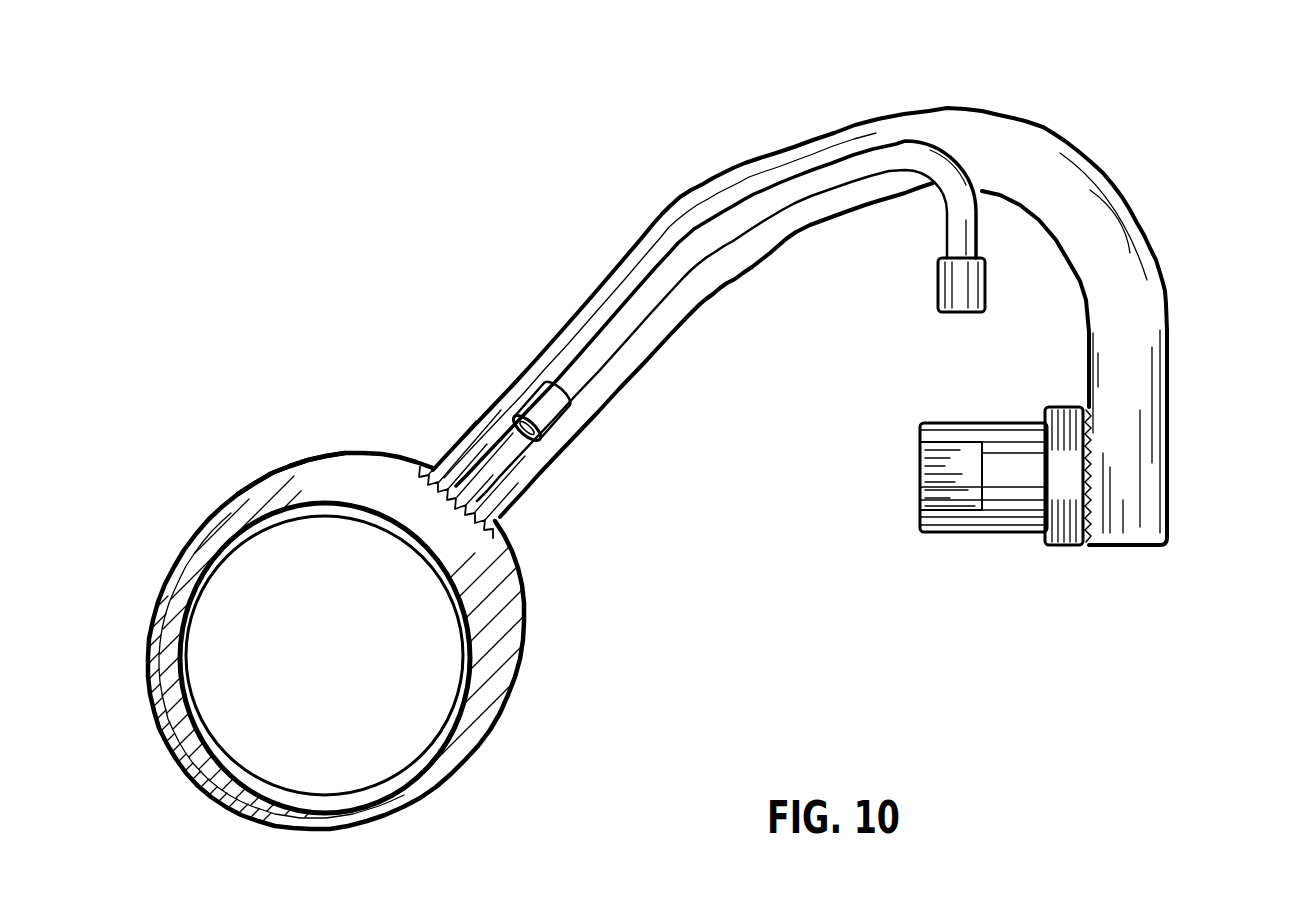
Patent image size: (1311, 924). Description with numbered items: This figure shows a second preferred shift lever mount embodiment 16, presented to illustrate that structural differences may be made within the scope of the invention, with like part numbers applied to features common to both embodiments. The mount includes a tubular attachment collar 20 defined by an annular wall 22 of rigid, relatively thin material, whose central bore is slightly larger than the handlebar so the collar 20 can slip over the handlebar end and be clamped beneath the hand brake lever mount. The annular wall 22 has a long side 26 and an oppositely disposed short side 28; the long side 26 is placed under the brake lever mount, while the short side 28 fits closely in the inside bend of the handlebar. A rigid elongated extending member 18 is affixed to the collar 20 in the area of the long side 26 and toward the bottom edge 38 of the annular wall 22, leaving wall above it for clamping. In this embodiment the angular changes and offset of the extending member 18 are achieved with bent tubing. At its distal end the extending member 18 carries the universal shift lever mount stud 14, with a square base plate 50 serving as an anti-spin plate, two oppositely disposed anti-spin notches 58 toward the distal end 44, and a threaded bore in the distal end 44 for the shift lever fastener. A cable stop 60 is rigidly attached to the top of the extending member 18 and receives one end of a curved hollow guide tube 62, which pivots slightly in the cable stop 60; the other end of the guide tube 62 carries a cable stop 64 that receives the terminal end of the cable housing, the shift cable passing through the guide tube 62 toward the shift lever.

The universal shift lever mount stud 14 is at (973, 532).
The second preferred shift lever mount embodiment 16 is at (660, 190).
The extending member 18 is at (687, 317).
The tubular attachment collar 20 is at (437, 787).
The annular wall 22 is at (500, 640).
The long side 26 is at (453, 547).
The short side 28 is at (215, 762).
The bottom edge 38 is at (313, 453).
The distal end 44 is at (917, 492).
The square base plate 50 is at (1060, 545).
The anti-spin notches 58 is at (920, 447).
The cable stop 60 is at (972, 283).
The curved hollow guide tube 62 is at (835, 167).
The cable stop 64 is at (540, 405).